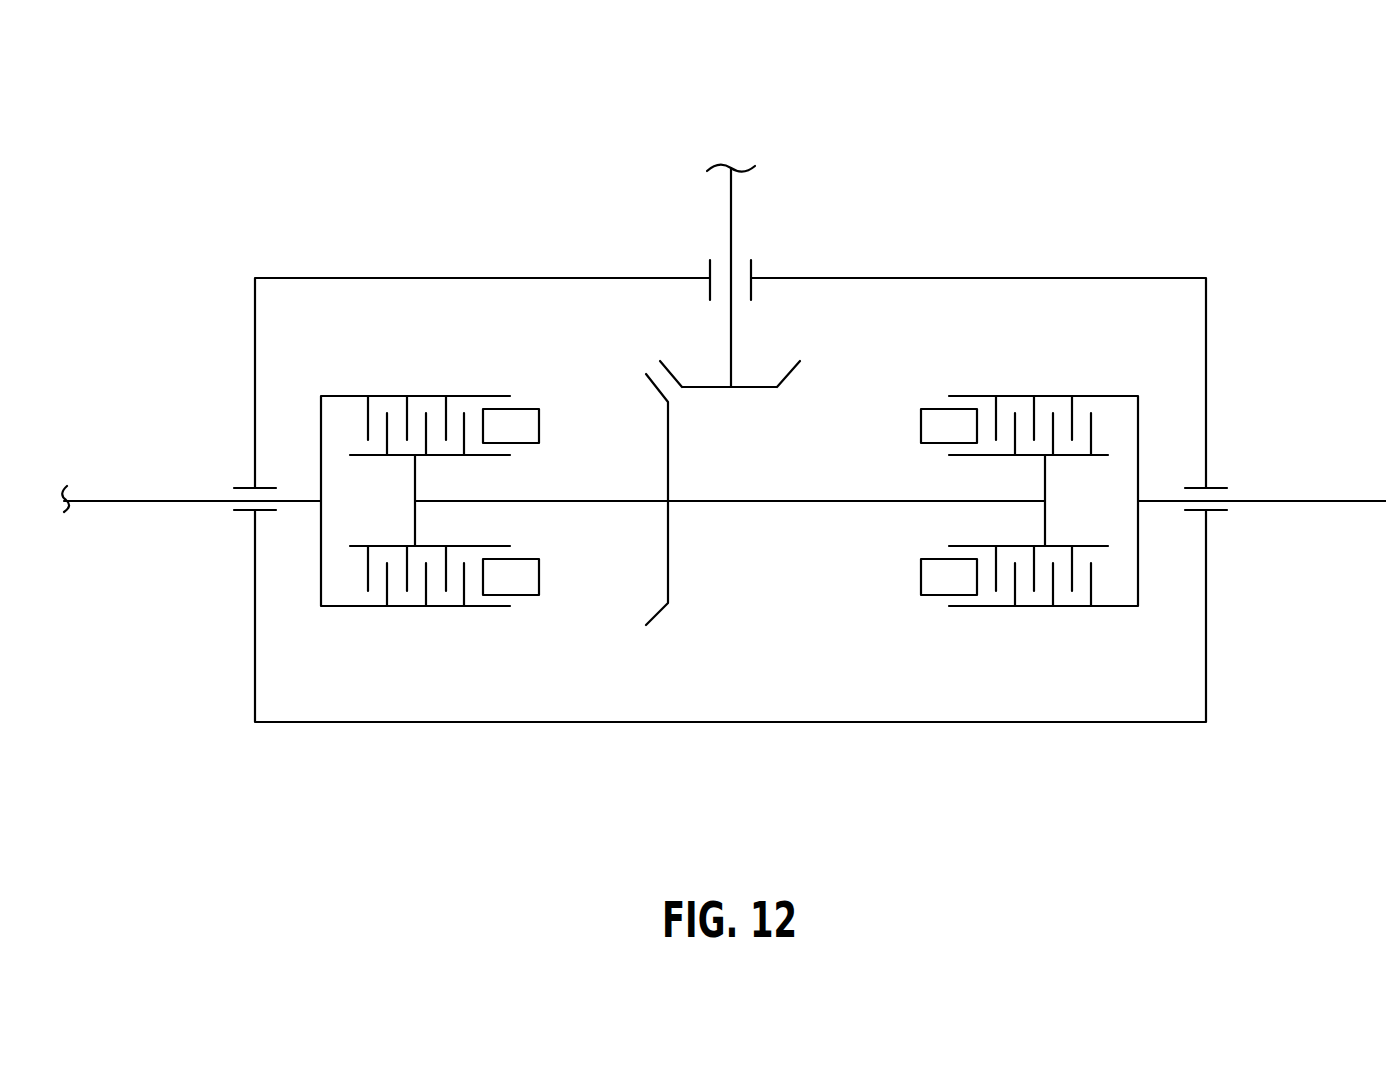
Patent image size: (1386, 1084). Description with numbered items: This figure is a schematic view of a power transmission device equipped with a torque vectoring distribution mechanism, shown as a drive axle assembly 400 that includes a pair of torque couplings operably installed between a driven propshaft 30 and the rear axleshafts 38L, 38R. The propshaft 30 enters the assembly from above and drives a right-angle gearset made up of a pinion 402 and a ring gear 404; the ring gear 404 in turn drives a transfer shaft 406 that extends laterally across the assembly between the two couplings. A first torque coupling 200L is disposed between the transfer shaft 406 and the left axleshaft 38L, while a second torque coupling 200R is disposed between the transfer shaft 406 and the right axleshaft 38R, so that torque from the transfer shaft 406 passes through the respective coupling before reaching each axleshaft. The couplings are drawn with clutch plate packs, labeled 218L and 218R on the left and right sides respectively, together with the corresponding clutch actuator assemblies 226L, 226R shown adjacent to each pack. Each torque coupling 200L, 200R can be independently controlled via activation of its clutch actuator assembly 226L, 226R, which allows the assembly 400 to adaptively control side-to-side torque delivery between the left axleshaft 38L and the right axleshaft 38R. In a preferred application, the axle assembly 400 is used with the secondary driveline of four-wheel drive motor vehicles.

The drive axle assembly 400 is at (1130, 172).
The propshaft 30 is at (731, 222).
The pinion 402 is at (762, 388).
The ring gear 404 is at (653, 607).
The transfer shaft 406 is at (733, 500).
The left axleshaft 38L is at (147, 500).
The right axleshaft 38R is at (1315, 501).
The first torque coupling 200L is at (393, 385).
The second torque coupling 200R is at (988, 392).
The left clutch plates 218L is at (413, 597).
The right clutch plates 218R is at (1043, 607).
The clutch actuator assembly 226L is at (540, 430).
The clutch actuator assembly 226R is at (907, 576).